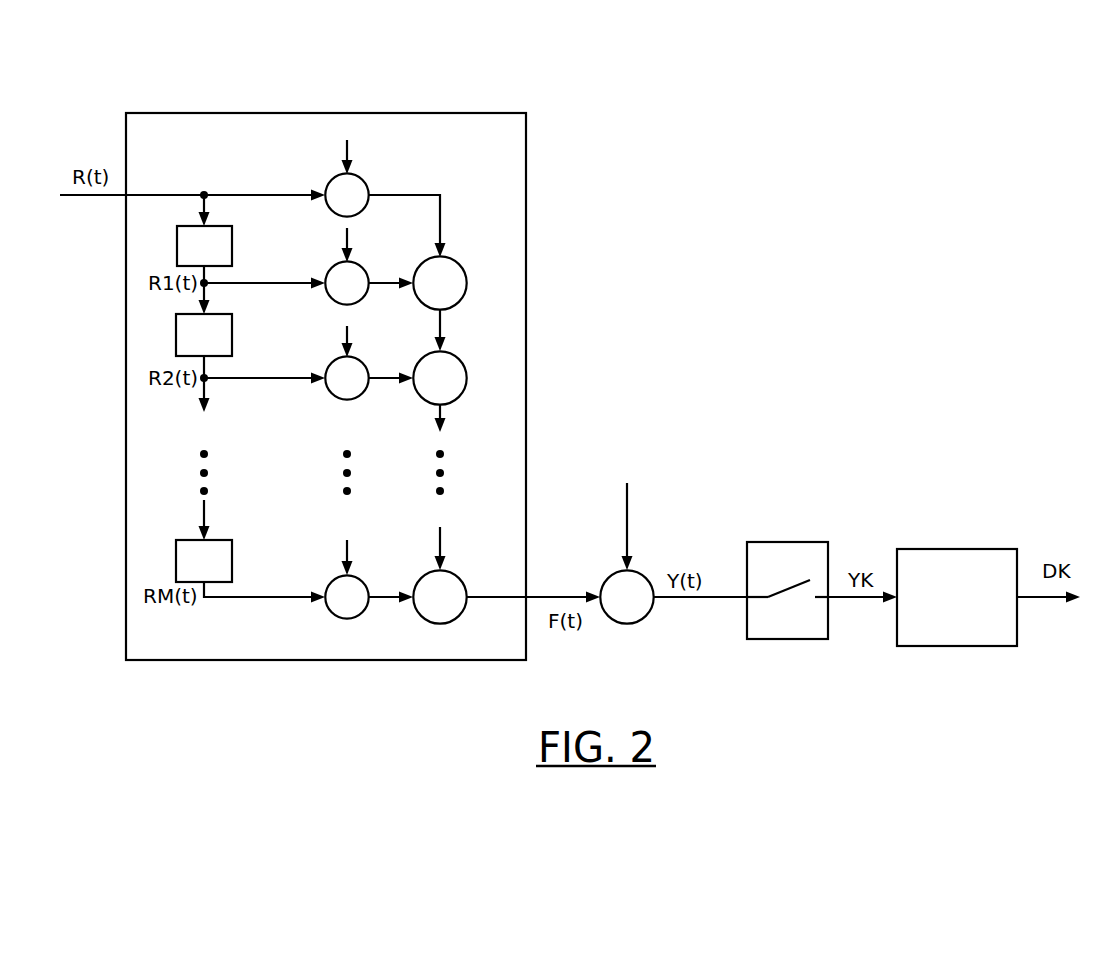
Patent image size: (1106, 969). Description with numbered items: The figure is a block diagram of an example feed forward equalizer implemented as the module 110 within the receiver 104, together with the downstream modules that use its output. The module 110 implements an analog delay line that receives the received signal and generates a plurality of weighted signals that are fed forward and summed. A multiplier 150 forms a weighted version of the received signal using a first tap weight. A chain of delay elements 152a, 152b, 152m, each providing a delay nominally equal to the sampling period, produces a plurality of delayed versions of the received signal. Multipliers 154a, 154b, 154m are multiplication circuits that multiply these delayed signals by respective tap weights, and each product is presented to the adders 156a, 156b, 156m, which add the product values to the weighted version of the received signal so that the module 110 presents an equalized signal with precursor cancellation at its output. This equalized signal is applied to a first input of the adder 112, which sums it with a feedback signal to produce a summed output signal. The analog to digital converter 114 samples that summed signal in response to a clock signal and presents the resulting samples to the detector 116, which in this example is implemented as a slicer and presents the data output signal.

The receiver 104 is at (383, 34).
The feed forward equalizer module 110 is at (181, 113).
The adder 112 is at (608, 578).
The analog to digital converter 114 is at (768, 542).
The detector 116 is at (940, 549).
The multiplier 150 is at (335, 178).
The delay element 152a is at (213, 226).
The delay element 152b is at (213, 314).
The delay element 152m is at (213, 540).
The multiplier 154a is at (333, 266).
The multiplier 154b is at (333, 361).
The multiplier 154m is at (333, 580).
The adder 156a is at (450, 259).
The adder 156b is at (450, 354).
The adder 156m is at (448, 574).